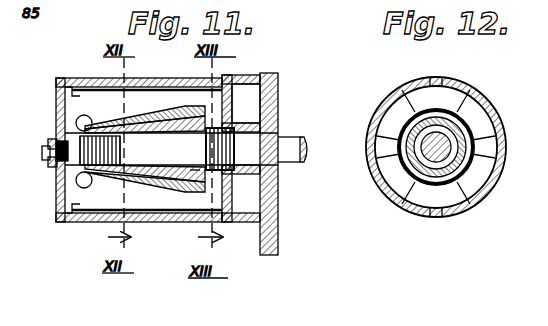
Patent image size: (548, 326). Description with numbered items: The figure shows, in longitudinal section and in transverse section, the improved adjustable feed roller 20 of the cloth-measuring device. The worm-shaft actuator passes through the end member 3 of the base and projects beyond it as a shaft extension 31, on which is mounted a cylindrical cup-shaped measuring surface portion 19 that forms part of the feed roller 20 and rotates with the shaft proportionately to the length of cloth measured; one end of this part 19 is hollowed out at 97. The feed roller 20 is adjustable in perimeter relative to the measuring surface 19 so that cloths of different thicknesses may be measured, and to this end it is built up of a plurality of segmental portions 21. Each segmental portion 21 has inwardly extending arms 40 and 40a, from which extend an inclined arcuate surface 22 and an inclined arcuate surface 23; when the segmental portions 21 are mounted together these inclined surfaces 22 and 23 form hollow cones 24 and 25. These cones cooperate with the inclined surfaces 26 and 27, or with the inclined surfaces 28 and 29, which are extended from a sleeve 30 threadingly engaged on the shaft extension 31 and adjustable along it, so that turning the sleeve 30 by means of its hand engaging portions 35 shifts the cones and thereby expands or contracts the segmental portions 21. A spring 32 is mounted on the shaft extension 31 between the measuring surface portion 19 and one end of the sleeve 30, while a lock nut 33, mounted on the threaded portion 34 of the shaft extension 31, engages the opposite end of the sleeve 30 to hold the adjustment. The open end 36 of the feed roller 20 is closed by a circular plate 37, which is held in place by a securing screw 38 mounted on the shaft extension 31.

In FIG. 11, the end member 3 is at (280, 98).
In FIG. 11, the measuring surface portion 19 is at (262, 72).
In FIG. 11, the feed roller 20 is at (139, 194).
In FIG. 12, the feed roller 20 is at (484, 95).
In FIG. 11, the segmental portion 21 is at (140, 82).
In FIG. 12, the segmental portion 21 is at (452, 80).
In FIG. 11, the inclined arcuate surface 22 is at (220, 100).
In FIG. 11, the inclined arcuate surface 23 is at (150, 118).
In FIG. 12, the inclined arcuate surface 23 is at (436, 147).
In FIG. 11, the hollow cone 24 is at (200, 172).
In FIG. 11, the hollow cone 25 is at (148, 180).
In FIG. 12, the hollow cone 25 is at (460, 143).
In FIG. 11, the inclined surface 26 is at (246, 103).
In FIG. 11, the inclined surface 27 is at (140, 165).
In FIG. 11, the inclined surface 28 is at (190, 172).
In FIG. 11, the inclined surface 29 is at (106, 222).
In FIG. 12, the inclined surface 29 is at (395, 198).
In FIG. 11, the sleeve 30 is at (160, 222).
In FIG. 12, the sleeve 30 is at (410, 134).
In FIG. 11, the shaft extension 31 is at (279, 190).
In FIG. 12, the shaft extension 31 is at (412, 153).
In FIG. 11, the spring 32 is at (290, 138).
In FIG. 11, the lock nut 33 is at (50, 163).
In FIG. 11, the threaded portion 34 is at (42, 152).
In FIG. 11, the hand engaging portion 35 is at (90, 111).
In FIG. 11, the open end 36 is at (62, 188).
In FIG. 11, the circular plate 37 is at (56, 110).
In FIG. 11, the securing screw 38 is at (50, 140).
In FIG. 11, the inwardly extending arm 40 is at (240, 82).
In FIG. 11, the inwardly extending arm 40a is at (172, 88).
In FIG. 12, the inwardly extending arm 40a is at (476, 112).
In FIG. 11, the hollowed out end 97 is at (279, 226).